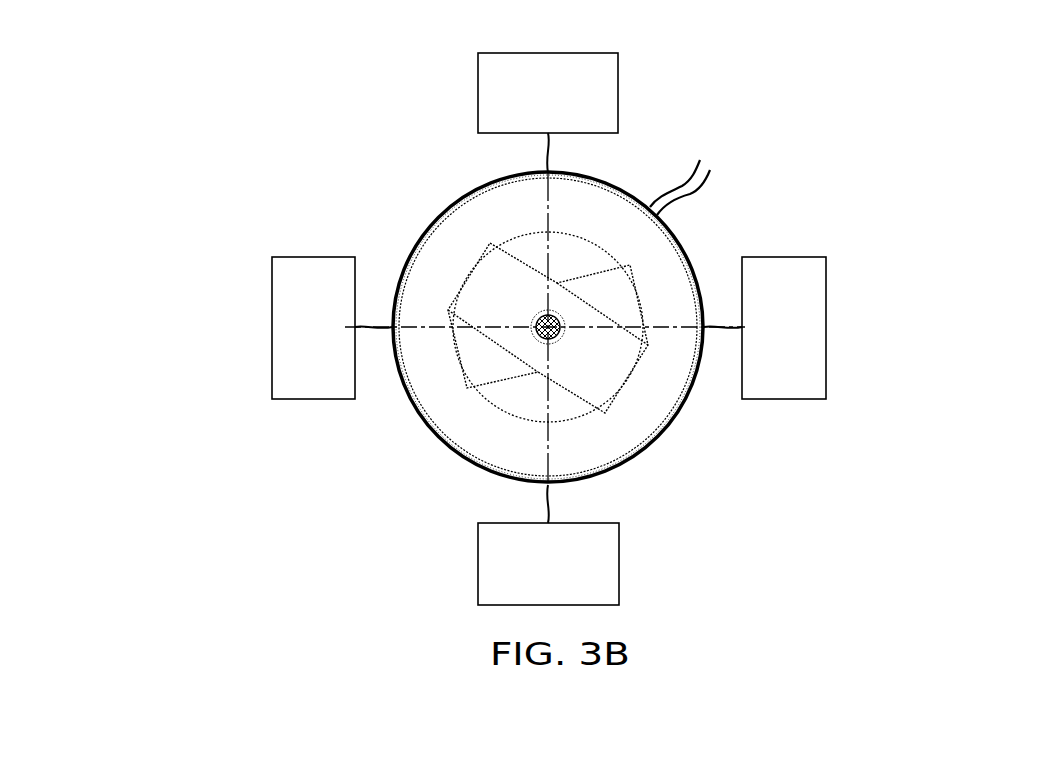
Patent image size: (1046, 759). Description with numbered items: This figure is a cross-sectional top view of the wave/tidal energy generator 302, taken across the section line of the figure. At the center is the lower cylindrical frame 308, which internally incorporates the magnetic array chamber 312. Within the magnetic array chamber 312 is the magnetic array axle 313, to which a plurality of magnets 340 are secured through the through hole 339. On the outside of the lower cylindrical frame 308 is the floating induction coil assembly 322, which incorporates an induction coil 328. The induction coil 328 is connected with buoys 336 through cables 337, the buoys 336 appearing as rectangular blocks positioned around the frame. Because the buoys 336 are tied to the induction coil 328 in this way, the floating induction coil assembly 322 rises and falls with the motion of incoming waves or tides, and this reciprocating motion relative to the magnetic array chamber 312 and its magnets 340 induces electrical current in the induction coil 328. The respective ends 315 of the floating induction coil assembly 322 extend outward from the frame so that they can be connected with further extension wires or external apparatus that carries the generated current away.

The wave/tidal energy generator 302 is at (186, 116).
The lower cylindrical frame 308 is at (453, 457).
The magnetic array chamber 312 is at (438, 385).
The magnetic array axle 313 is at (530, 327).
The respective ends 315 is at (734, 167).
The floating induction coil assembly 322 is at (243, 368).
The induction coil 328 is at (677, 232).
The buoys 336 is at (800, 325).
The cables 337 is at (713, 328).
The through hole 339 is at (567, 333).
The magnets 340 is at (607, 383).